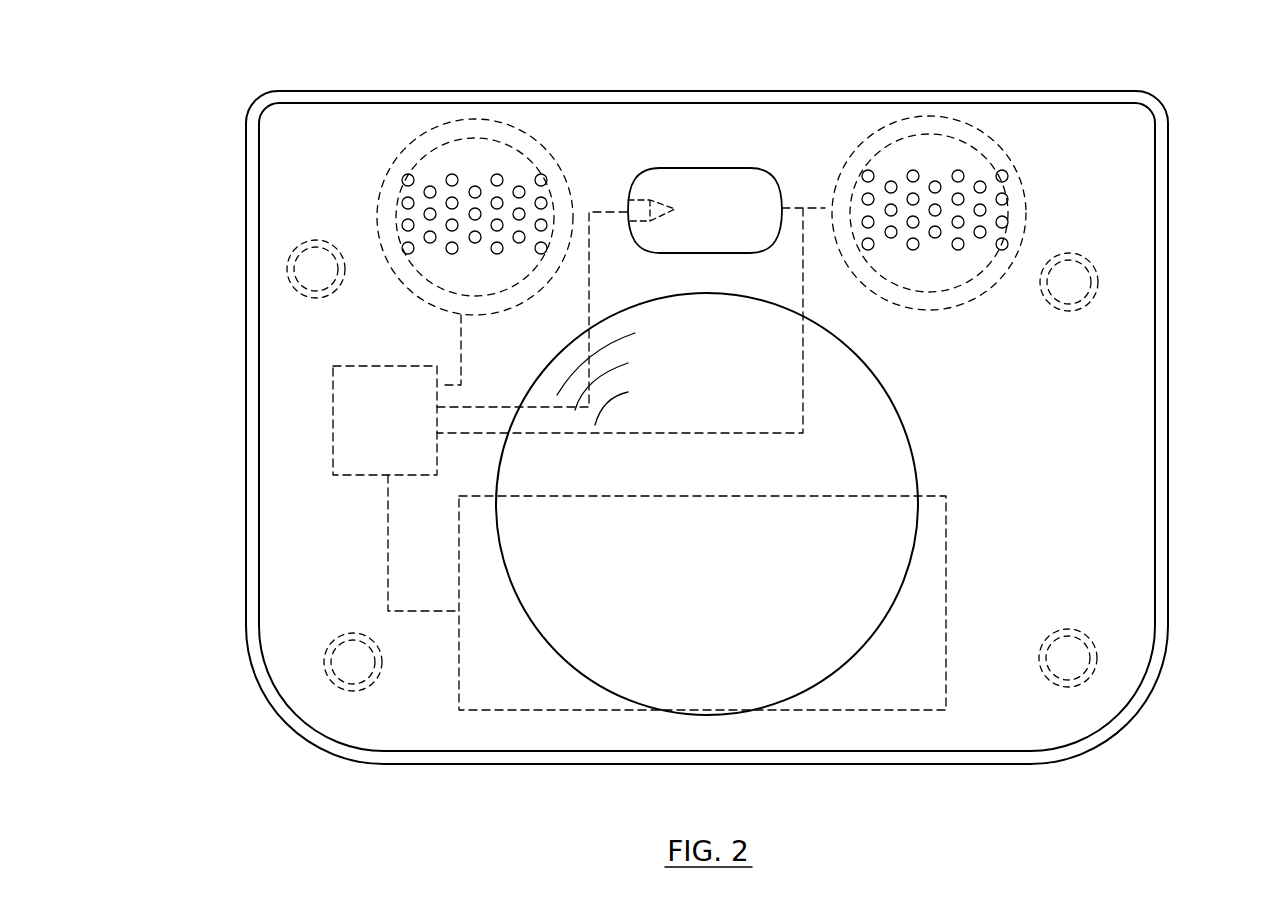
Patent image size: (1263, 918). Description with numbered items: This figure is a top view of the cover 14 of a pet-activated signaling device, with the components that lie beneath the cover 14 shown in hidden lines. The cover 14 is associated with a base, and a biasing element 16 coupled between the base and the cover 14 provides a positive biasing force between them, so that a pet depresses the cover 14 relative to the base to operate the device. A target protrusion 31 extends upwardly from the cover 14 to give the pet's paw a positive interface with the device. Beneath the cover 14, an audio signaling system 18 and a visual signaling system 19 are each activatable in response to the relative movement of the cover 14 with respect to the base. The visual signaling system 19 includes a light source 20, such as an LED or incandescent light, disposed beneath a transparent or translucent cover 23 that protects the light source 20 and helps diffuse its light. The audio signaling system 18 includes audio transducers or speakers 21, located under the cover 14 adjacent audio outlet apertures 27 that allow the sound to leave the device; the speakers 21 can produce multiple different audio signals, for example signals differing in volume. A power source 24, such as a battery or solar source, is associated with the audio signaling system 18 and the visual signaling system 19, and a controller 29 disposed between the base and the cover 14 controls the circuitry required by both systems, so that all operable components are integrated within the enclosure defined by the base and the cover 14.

The cover 14 is at (246, 474).
The biasing element 16 is at (287, 273).
The audio signaling system 18 is at (362, 312).
The visual signaling system 19 is at (598, 166).
The light source 20 is at (688, 203).
The audio transducers or speakers 21 is at (530, 122).
The transparent or translucent cover 23 is at (730, 197).
The power source 24 is at (459, 690).
The audio outlet apertures 27 is at (476, 163).
The controller 29 is at (333, 447).
The target protrusion 31 is at (908, 440).